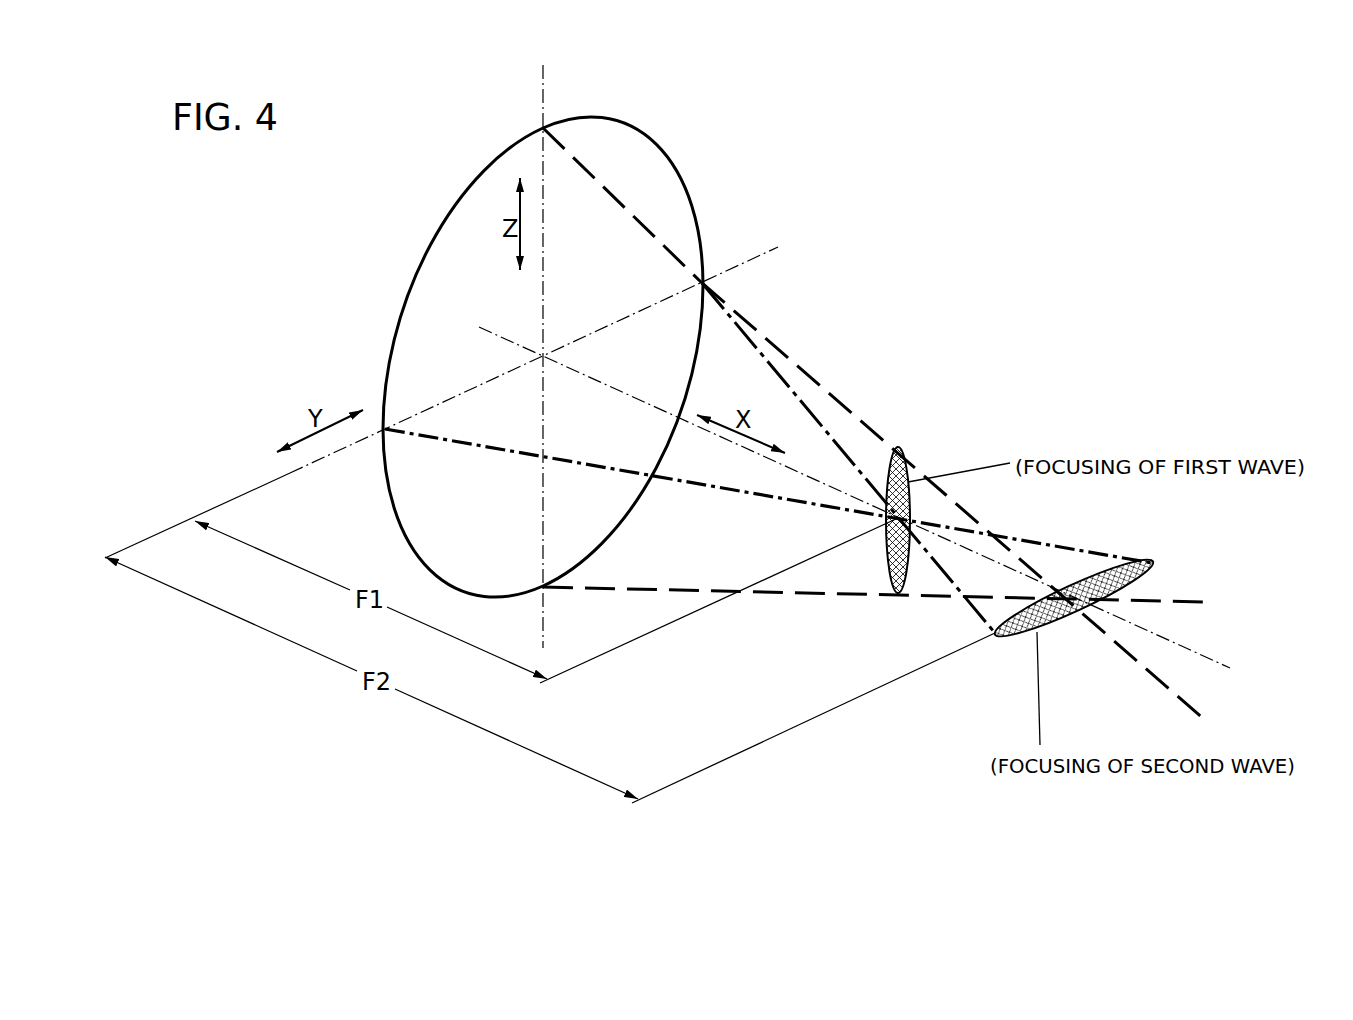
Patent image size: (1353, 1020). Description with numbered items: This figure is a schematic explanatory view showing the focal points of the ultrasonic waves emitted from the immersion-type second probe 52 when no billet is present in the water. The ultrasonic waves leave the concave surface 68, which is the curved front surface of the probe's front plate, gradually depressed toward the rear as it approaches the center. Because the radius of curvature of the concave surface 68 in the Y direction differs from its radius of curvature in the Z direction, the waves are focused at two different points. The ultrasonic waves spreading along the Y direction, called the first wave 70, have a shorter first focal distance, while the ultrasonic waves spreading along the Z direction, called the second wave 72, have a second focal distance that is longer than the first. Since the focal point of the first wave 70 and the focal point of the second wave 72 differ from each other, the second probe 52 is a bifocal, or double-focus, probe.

The concave surface 68 is at (681, 172).
The second probe 52 is at (589, 357).
The first wave 70 is at (693, 486).
The second wave 72 is at (776, 596).